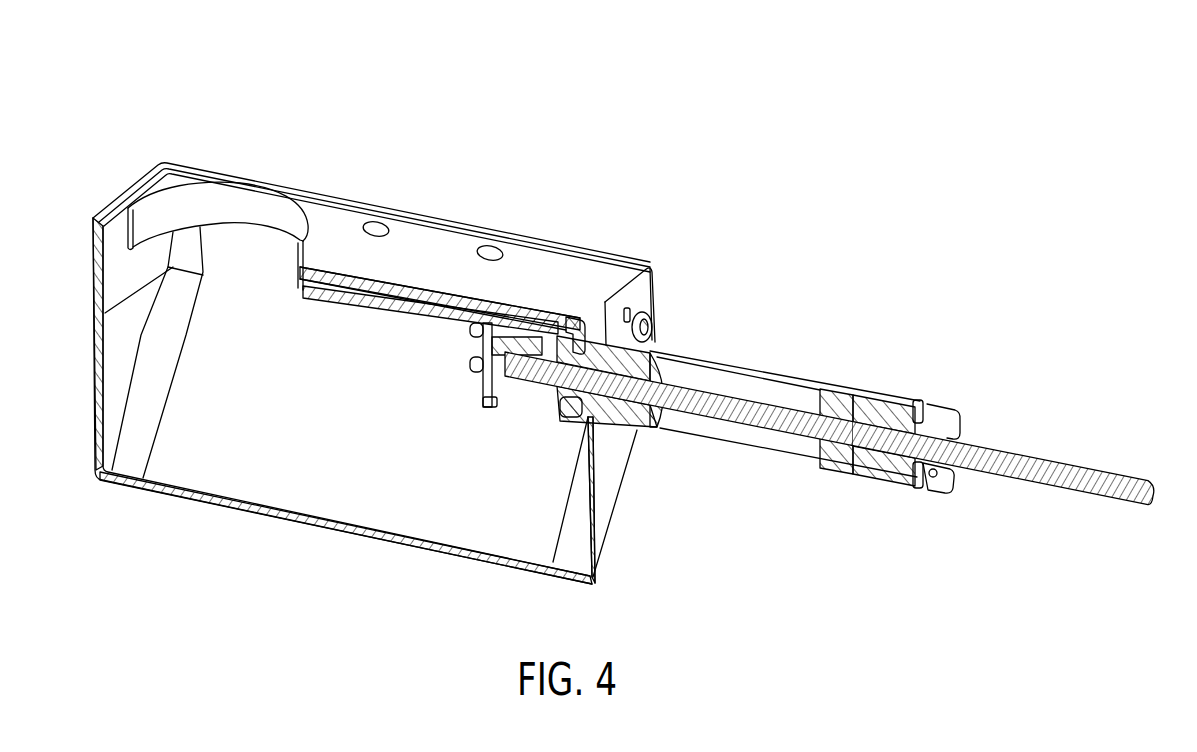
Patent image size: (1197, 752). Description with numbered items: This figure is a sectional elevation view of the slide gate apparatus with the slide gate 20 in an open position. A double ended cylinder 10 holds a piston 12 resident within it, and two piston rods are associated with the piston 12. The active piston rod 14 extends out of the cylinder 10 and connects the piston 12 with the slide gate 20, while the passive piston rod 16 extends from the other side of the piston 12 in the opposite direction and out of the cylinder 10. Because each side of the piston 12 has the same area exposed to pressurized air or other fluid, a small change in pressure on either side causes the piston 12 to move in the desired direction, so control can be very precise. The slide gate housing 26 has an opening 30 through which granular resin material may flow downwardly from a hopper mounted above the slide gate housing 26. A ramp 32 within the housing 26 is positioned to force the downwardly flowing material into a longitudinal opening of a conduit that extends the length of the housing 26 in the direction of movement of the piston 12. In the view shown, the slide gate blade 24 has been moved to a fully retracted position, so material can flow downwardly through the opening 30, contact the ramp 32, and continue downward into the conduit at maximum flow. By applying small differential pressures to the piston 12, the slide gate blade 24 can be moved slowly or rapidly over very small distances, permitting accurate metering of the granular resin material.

The double ended cylinder 10 is at (838, 370).
The piston 12 is at (842, 475).
The active piston rod 14 is at (707, 418).
The passive piston rod 16 is at (1053, 455).
The slide gate 20 is at (536, 94).
The slide gate blade 24 is at (405, 318).
The slide gate housing 26 is at (458, 215).
The opening 30 is at (254, 197).
The ramp 32 is at (260, 496).